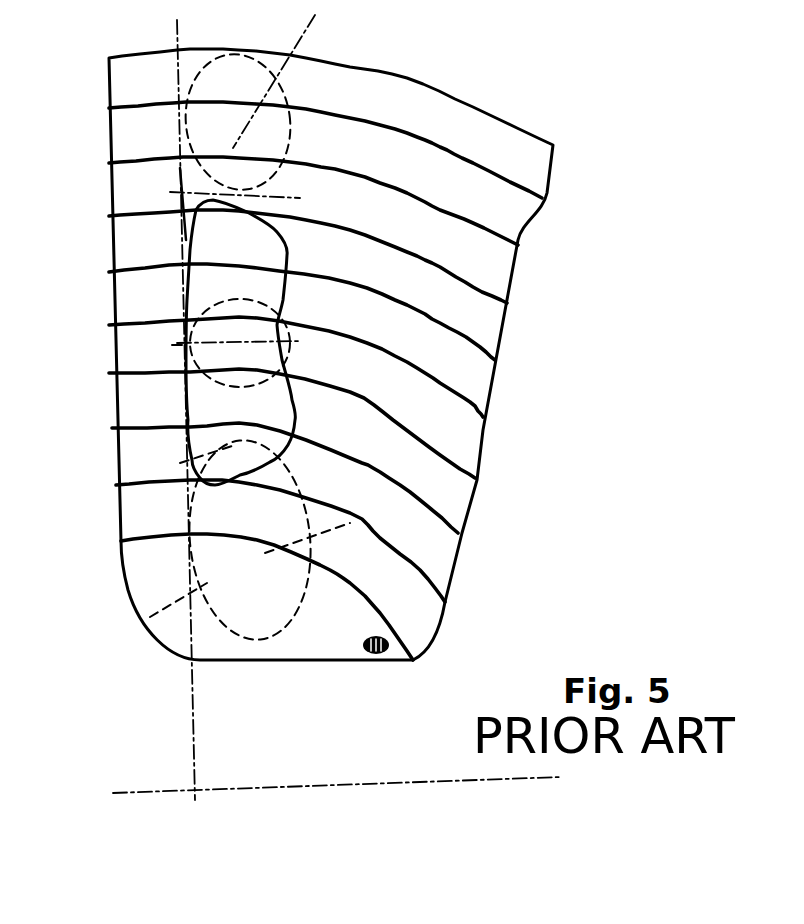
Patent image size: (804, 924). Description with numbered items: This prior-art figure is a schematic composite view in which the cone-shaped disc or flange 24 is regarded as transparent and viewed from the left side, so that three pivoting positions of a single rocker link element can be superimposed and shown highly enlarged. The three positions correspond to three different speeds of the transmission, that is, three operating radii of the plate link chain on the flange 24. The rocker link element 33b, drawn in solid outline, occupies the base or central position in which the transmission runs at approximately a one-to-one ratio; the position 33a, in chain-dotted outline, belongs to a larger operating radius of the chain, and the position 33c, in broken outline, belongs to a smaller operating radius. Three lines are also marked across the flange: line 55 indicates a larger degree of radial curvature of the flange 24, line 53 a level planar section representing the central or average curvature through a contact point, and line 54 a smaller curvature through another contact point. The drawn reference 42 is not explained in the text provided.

The flange 24 is at (405, 78).
The rocker link element in larger-radius position 33a is at (257, 98).
The rocker link element in central position 33b is at (290, 328).
The rocker link element in smaller-radius position 33c is at (350, 525).
The section line 55 is at (186, 174).
The section line 53 is at (190, 364).
The section line 54 is at (180, 463).
The weight cavity 42 is at (150, 617).